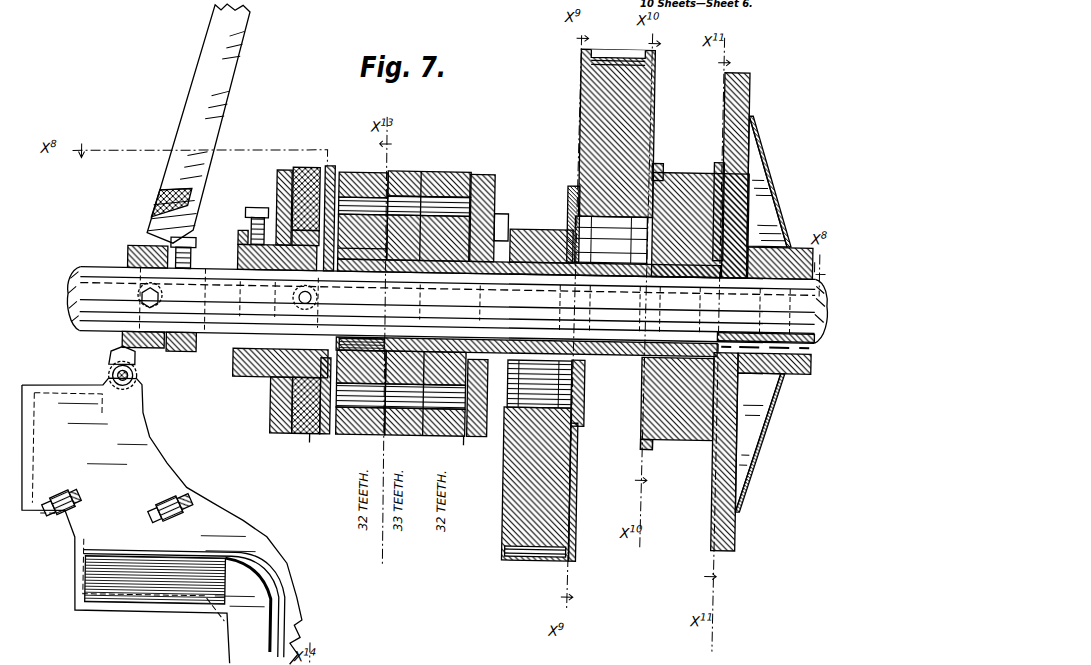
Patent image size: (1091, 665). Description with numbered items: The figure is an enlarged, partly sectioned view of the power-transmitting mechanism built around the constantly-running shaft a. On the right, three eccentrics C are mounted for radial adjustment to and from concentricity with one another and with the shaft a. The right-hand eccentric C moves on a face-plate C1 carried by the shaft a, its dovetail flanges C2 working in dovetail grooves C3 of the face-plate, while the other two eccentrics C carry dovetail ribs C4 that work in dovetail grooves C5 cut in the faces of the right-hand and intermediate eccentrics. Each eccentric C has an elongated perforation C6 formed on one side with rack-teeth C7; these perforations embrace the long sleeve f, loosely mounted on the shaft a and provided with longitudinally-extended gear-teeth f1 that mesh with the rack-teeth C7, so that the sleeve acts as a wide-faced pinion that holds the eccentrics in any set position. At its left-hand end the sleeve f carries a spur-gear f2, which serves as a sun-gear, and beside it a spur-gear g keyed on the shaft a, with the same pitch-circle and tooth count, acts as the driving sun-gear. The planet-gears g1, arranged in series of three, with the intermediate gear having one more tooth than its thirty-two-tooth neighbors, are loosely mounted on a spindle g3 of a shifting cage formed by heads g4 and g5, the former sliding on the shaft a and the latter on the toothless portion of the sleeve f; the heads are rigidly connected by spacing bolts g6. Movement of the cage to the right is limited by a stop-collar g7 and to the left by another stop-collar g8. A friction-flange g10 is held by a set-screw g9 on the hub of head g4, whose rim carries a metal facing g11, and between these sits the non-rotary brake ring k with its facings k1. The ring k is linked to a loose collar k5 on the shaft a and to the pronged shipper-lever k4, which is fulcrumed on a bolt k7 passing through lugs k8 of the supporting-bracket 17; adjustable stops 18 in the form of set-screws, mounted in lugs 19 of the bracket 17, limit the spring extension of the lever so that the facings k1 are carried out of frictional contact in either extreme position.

The constantly-running shaft a is at (188, 316).
The sleeve f is at (470, 271).
The gear-teeth f1 is at (692, 275).
The spur-gear f2 is at (385, 330).
The ring k is at (305, 168).
The facings k1 is at (290, 438).
The shipper-lever k4 is at (202, 82).
The loose collar k5 is at (133, 248).
The bolt k7 is at (124, 392).
The lugs k8 is at (108, 375).
The spur-gear g is at (352, 172).
The planet-gears g1 is at (445, 172).
The spindle g3 is at (483, 192).
The head g4 is at (314, 445).
The head g5 is at (466, 445).
The spacing bolts g6 is at (487, 658).
The stop-collar g7 is at (272, 382).
The stop-collar g8 is at (176, 358).
The set-screw g9 is at (250, 210).
The friction-flange g10 is at (283, 172).
The metal facing g11 is at (305, 438).
The eccentrics C is at (582, 102).
The face-plate C1 is at (735, 156).
The dovetail flanges C2 is at (752, 222).
The dovetail grooves C3 is at (782, 376).
The dovetail ribs C4 is at (658, 162).
The dovetail grooves C5 is at (652, 447).
The elongated perforation C6 is at (568, 220).
The rack-teeth C7 is at (588, 408).
The supporting-bracket 17 is at (284, 610).
The adjustable stops 18 is at (150, 514).
The lugs 19 is at (165, 523).